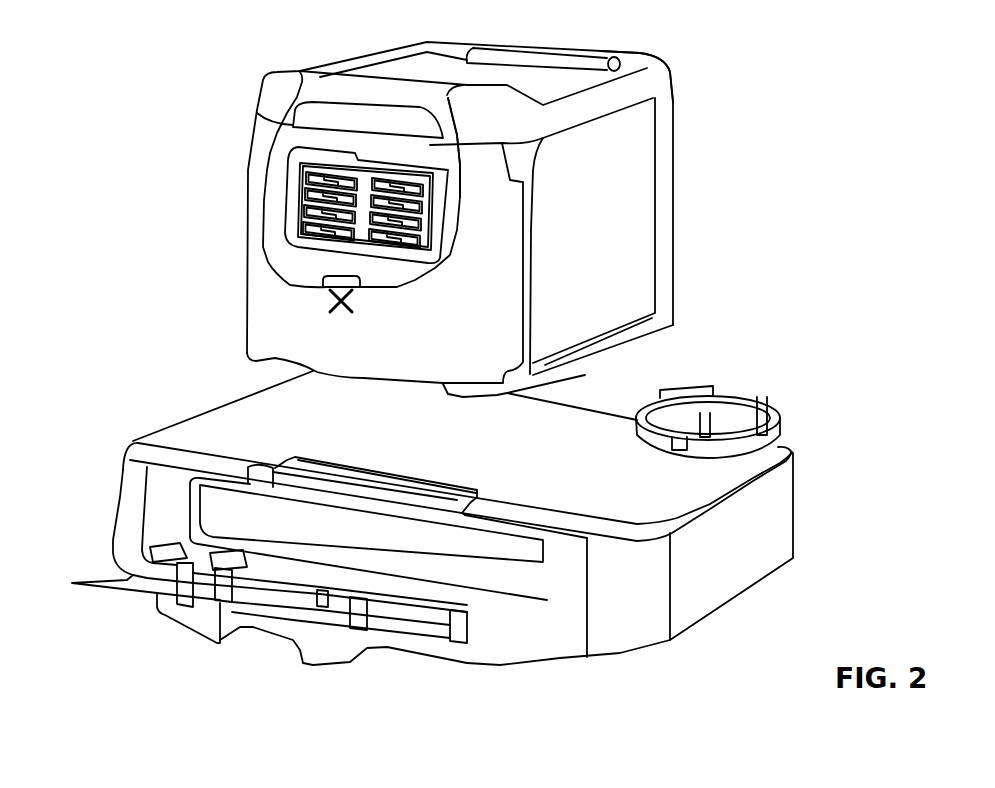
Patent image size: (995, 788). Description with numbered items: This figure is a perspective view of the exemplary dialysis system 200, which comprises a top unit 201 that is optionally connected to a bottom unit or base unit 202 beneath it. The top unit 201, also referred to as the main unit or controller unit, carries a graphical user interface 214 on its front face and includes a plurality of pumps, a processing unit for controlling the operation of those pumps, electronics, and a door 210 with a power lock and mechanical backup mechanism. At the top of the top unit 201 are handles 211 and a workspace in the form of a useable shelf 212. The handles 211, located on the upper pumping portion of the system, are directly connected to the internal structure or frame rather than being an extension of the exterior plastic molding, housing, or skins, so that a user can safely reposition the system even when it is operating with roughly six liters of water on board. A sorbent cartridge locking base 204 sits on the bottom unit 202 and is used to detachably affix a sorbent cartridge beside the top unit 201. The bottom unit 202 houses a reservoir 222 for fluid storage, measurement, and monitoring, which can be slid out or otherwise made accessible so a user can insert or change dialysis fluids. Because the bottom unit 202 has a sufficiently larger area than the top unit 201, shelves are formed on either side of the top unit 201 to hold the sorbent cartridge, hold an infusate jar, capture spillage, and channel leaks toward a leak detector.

The dialysis system 200 is at (135, 49).
The top unit 201 is at (337, 110).
The bottom unit 202 is at (127, 495).
The sorbent cartridge locking base 204 is at (777, 428).
The door 210 is at (477, 165).
The handles 211 is at (537, 47).
The useable shelf 212 is at (630, 68).
The graphical user interface 214 is at (297, 192).
The reservoir 222 is at (573, 557).